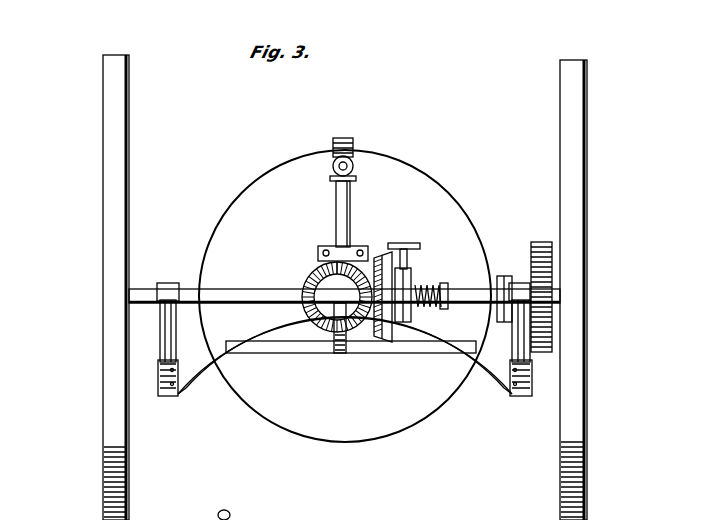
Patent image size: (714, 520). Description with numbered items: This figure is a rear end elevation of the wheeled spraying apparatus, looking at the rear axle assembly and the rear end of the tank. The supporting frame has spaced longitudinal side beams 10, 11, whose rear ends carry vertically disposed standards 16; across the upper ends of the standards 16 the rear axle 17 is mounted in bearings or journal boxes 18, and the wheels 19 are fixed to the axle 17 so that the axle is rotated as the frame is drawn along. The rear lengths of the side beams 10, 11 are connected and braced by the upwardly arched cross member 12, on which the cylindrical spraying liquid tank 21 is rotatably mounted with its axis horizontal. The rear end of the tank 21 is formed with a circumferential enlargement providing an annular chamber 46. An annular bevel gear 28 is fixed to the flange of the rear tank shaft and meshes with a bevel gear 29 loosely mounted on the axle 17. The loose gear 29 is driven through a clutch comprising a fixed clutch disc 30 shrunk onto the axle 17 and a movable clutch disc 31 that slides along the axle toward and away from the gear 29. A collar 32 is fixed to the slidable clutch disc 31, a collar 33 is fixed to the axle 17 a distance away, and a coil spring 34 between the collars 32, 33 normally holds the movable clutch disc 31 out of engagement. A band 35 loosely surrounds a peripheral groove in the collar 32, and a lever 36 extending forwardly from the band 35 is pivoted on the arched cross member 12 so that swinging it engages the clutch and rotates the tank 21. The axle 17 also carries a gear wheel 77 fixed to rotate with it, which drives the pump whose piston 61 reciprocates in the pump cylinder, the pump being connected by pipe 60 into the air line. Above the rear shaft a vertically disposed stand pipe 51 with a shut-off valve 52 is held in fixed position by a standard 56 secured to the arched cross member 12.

The wheels 19 is at (587, 108).
The spraying liquid tank 21 is at (362, 441).
The rear axle 17 is at (250, 296).
The standards 16 is at (160, 345).
The bearings or journal boxes 18 is at (168, 283).
The side beam 10 is at (172, 396).
The side beam 11 is at (519, 396).
The pipe 60 is at (497, 276).
The piston 61 is at (518, 282).
The arched cross member 12 is at (492, 378).
The coil spring 34 is at (354, 331).
The annular bevel gear 28 is at (308, 272).
The standard 56 is at (333, 338).
The shut-off valve 52 is at (352, 160).
The stand pipe 51 is at (354, 244).
The bevel gear 29 is at (366, 247).
The fixed clutch disc 30 is at (365, 345).
The movable clutch disc 31 is at (404, 322).
The lever 36 is at (410, 243).
The band 35 is at (408, 262).
The collar 32 is at (420, 282).
The collar 33 is at (436, 288).
The gear wheel 77 is at (552, 323).
The annular chamber 46 is at (269, 511).